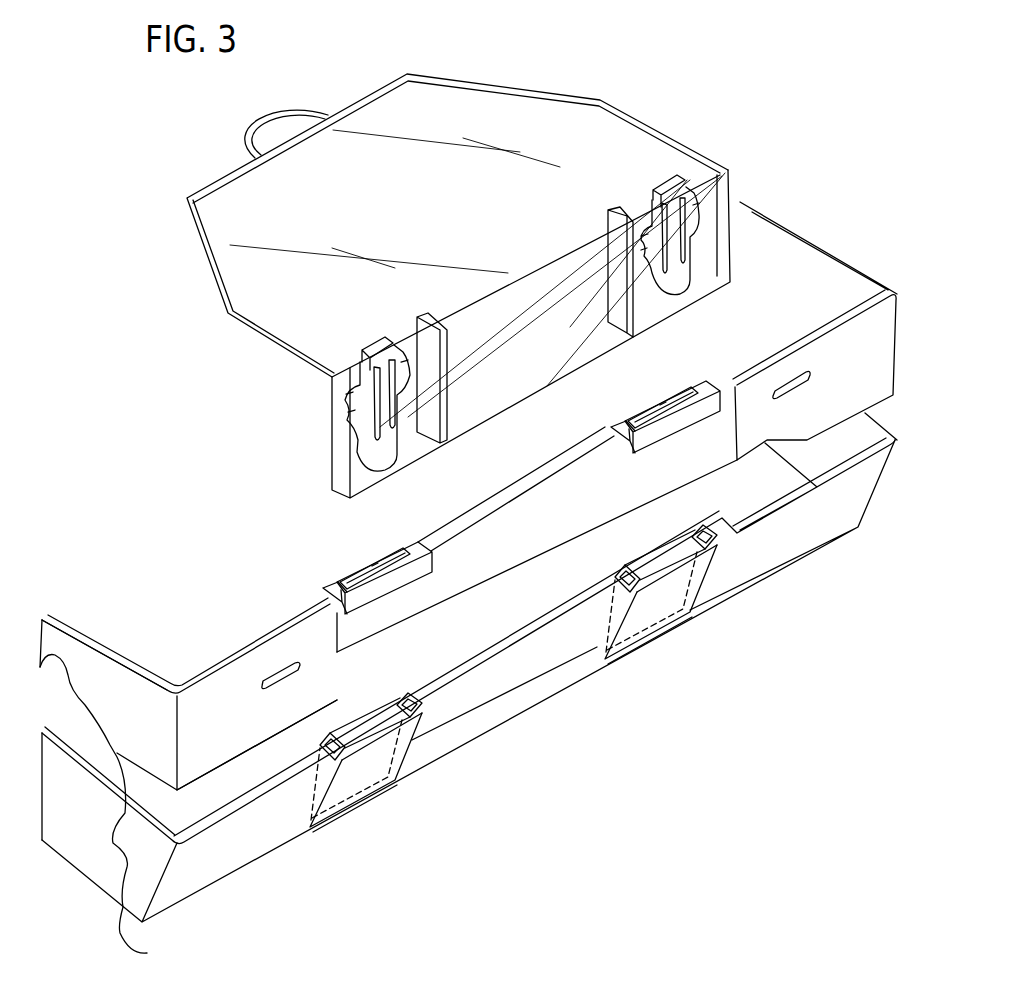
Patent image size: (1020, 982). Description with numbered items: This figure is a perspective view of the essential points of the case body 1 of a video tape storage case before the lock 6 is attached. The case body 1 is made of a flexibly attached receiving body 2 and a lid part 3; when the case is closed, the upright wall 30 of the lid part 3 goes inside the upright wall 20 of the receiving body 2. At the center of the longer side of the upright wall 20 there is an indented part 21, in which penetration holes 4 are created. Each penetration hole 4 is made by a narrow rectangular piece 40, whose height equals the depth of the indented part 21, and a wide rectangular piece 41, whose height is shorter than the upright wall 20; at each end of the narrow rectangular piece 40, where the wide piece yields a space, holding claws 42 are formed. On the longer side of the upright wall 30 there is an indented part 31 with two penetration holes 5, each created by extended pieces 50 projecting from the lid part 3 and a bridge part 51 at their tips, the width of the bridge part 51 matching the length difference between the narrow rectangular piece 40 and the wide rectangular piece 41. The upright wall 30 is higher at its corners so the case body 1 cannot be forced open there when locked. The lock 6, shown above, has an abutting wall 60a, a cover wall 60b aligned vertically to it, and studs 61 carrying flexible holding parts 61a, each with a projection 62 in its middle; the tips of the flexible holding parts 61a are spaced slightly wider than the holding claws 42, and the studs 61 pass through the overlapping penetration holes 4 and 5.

The case body 1 is at (112, 845).
The receiving body 2 is at (469, 686).
The lid part 3 is at (468, 577).
The penetration hole 4 is at (377, 732).
The penetration hole 5 is at (375, 567).
The lock 6 is at (482, 265).
The upright wall 20 is at (238, 848).
The indented part 21 is at (557, 623).
The upright wall 30 is at (223, 747).
The indented part 31 is at (512, 533).
The narrow rectangular piece 40 is at (513, 660).
The wide rectangular piece 41 is at (358, 768).
The holding claw 42 is at (395, 698).
The extended piece 50 is at (521, 496).
The bridge part 51 is at (392, 583).
The abutting wall 60a is at (590, 115).
The cover wall 60b is at (540, 287).
The stud 61 is at (522, 300).
The flexible holding part 61a is at (643, 220).
The projection 62 is at (700, 226).